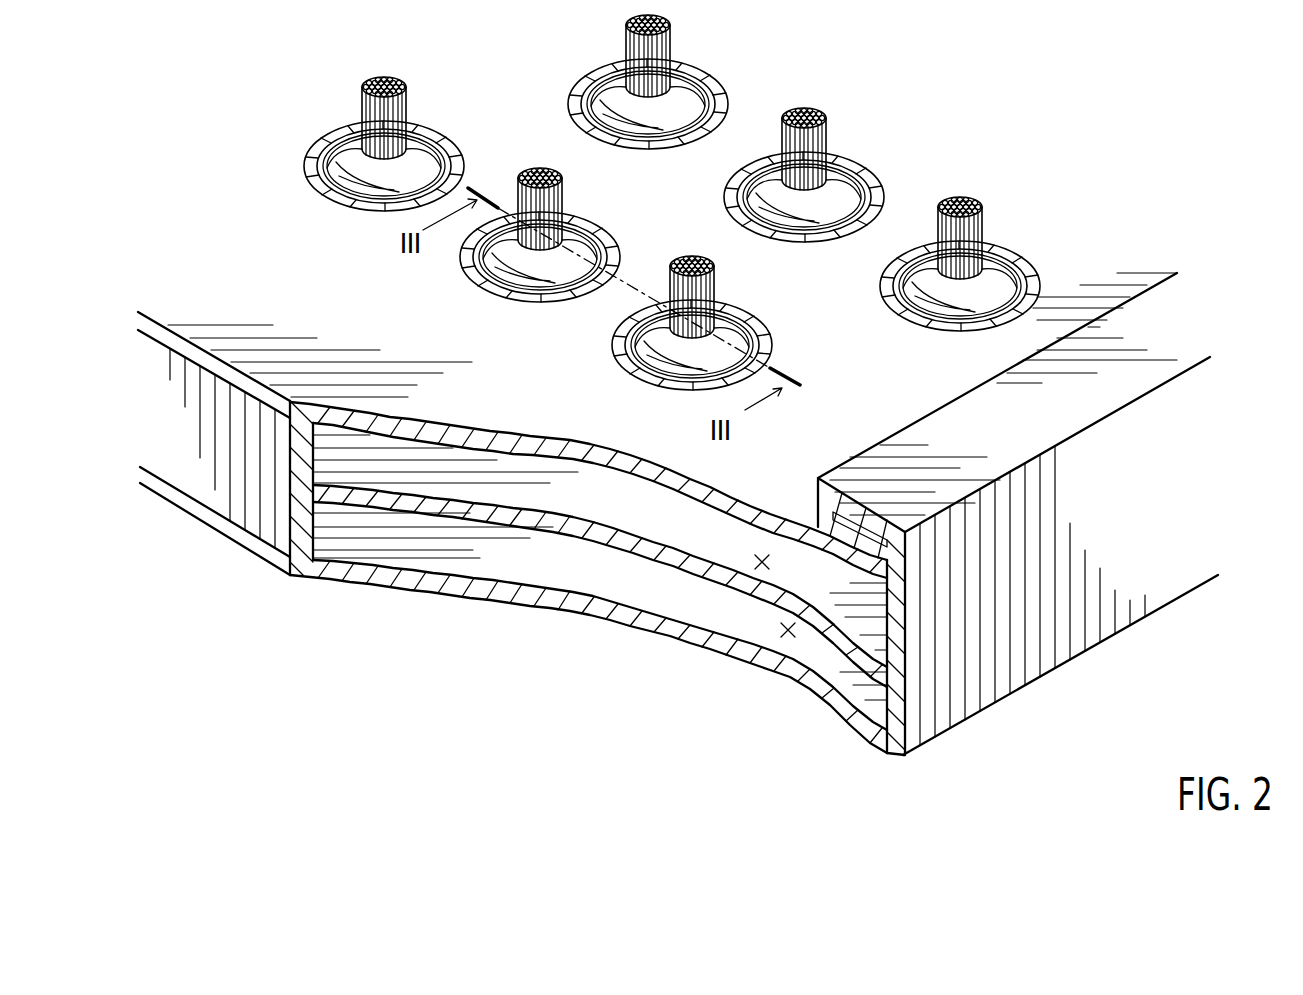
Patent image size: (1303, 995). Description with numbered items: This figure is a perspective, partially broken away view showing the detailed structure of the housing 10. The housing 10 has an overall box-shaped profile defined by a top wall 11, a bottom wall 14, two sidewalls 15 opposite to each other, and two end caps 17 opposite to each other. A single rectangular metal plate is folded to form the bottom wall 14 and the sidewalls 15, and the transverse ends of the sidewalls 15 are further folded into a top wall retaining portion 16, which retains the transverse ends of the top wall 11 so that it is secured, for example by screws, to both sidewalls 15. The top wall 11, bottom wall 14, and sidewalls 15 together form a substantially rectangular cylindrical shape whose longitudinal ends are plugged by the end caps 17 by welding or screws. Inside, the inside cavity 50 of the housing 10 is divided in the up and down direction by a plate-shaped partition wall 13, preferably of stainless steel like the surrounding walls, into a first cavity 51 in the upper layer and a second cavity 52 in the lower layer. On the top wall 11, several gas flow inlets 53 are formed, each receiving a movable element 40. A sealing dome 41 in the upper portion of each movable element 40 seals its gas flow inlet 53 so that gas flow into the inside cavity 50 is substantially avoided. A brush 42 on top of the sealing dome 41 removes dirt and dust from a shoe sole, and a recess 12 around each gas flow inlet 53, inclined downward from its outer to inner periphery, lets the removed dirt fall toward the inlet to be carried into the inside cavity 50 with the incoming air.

The housing 10 is at (337, 675).
The top wall 11 is at (363, 417).
The recess 12 is at (960, 249).
The partition wall 13 is at (378, 504).
The bottom wall 14 is at (550, 602).
The sidewalls 15 is at (1062, 637).
The top wall retaining portion 16 is at (963, 462).
The end caps 17 is at (253, 532).
The movable element 40 is at (1020, 258).
The sealing dome 41 is at (960, 260).
The brush 42 is at (962, 202).
The inside cavity 50 is at (672, 678).
The first cavity 51 is at (760, 566).
The second cavity 52 is at (786, 634).
The gas flow inlet 53 is at (942, 315).